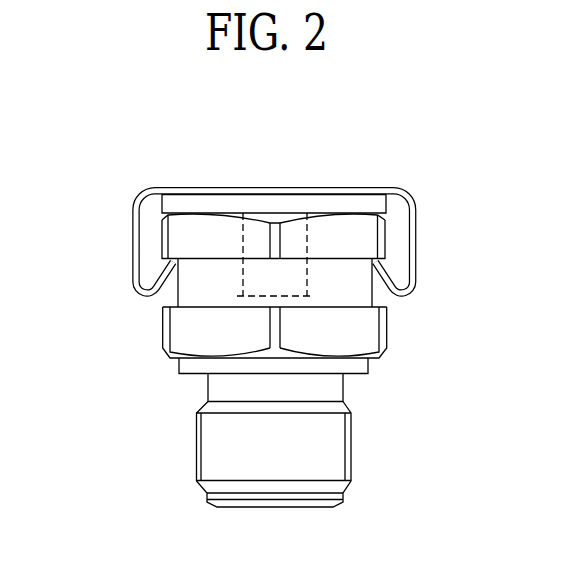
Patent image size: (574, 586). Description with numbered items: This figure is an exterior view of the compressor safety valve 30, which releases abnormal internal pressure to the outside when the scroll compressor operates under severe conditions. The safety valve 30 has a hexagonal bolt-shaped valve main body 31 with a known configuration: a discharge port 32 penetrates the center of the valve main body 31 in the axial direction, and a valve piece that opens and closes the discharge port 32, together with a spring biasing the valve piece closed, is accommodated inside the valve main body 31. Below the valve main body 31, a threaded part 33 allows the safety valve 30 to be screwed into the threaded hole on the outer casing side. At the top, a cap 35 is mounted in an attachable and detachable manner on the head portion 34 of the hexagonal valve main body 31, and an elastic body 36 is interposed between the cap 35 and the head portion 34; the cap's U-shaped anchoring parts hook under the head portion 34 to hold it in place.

The safety valve 30 is at (430, 157).
The valve main body 31 is at (358, 329).
The discharge port 32 is at (307, 228).
The threaded part 33 is at (197, 447).
The head portion 34 is at (210, 237).
The cap 35 is at (133, 242).
The elastic body 36 is at (277, 203).